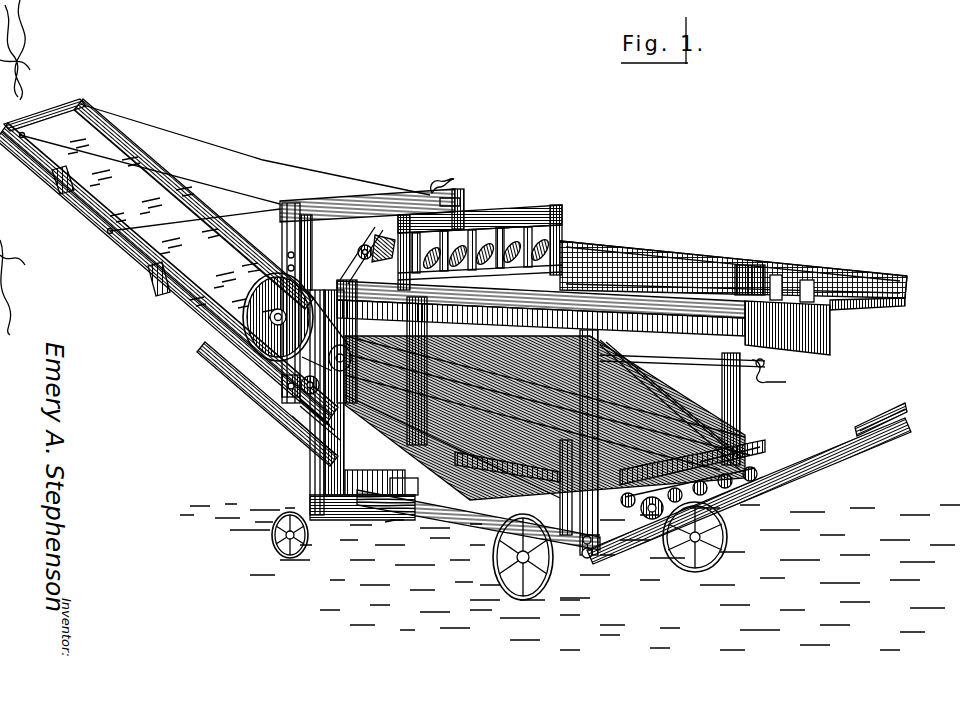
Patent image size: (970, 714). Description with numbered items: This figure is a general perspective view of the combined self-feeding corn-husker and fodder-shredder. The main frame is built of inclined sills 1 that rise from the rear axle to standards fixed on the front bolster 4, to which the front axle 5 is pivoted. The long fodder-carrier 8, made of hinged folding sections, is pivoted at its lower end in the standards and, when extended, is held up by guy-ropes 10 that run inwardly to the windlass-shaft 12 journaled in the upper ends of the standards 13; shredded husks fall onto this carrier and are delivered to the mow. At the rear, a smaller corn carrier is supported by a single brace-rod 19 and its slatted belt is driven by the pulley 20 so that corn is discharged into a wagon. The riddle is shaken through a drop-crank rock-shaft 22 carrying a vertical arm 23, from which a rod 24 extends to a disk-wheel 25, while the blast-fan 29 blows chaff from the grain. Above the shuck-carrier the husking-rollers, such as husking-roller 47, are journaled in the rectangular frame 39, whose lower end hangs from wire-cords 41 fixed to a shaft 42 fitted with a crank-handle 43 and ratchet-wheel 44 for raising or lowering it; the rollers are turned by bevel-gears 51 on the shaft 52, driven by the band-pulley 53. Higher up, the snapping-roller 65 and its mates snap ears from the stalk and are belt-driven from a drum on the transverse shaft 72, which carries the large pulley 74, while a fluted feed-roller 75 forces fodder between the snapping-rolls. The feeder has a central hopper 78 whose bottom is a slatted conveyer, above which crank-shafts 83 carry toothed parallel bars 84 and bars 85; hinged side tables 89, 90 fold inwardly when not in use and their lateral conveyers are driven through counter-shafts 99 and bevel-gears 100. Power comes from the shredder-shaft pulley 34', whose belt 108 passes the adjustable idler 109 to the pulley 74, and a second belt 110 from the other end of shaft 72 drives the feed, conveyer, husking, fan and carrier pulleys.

The inclined sills 1 is at (421, 457).
The front bolster 4 is at (400, 488).
The front axle 5 is at (390, 523).
The fodder-carrier 8 is at (100, 212).
The guy-ropes 10 is at (262, 160).
The windlass-shaft 12 is at (272, 205).
The standards 13 is at (372, 206).
The brace-rod 19 is at (750, 447).
The pulley 20 is at (590, 558).
The drop-crank rock-shaft 22 is at (404, 462).
The vertical arm 23 is at (412, 431).
The rod 24 is at (320, 438).
The disk-wheel 25 is at (317, 431).
The blast-fan 29 is at (460, 450).
The pulley 34' is at (277, 414).
The rectangular frame 39 is at (636, 410).
The wire-cords 41 is at (741, 406).
The shaft 42 is at (700, 368).
The crank-handle 43 is at (783, 363).
The ratchet-wheel 44 is at (756, 364).
The husking-roller 47 is at (655, 410).
The bevel-gears 51 is at (660, 517).
The shaft 52 is at (687, 533).
The band-pulley 53 is at (813, 447).
The snapping-roller 65 is at (510, 230).
The transverse shaft 72 is at (246, 318).
The large pulley 74 is at (225, 347).
The fluted feed-roller 75 is at (482, 222).
The central hopper 78 is at (822, 332).
The double crank-shafts 83 is at (680, 270).
The parallel bars 84 is at (541, 299).
The bars 85 is at (747, 272).
The side table 89 is at (900, 291).
The side table 90 is at (541, 318).
The counter-shafts 99 is at (353, 280).
The bevel-gears 100 is at (382, 232).
The belt 108 is at (287, 372).
The adjustable idler 109 is at (277, 381).
The belt 110 is at (757, 443).